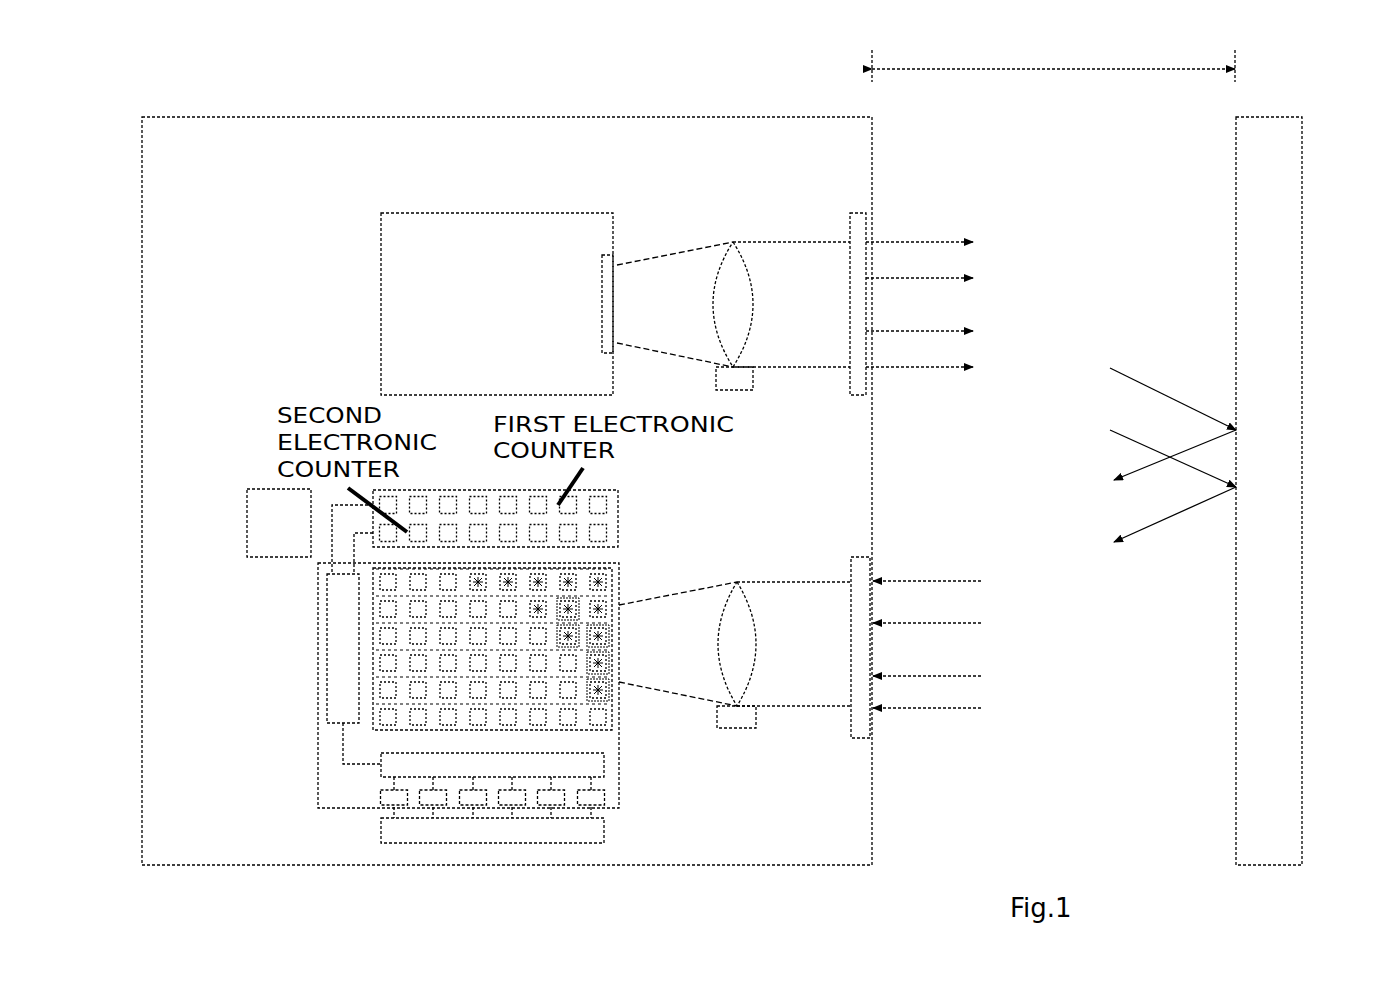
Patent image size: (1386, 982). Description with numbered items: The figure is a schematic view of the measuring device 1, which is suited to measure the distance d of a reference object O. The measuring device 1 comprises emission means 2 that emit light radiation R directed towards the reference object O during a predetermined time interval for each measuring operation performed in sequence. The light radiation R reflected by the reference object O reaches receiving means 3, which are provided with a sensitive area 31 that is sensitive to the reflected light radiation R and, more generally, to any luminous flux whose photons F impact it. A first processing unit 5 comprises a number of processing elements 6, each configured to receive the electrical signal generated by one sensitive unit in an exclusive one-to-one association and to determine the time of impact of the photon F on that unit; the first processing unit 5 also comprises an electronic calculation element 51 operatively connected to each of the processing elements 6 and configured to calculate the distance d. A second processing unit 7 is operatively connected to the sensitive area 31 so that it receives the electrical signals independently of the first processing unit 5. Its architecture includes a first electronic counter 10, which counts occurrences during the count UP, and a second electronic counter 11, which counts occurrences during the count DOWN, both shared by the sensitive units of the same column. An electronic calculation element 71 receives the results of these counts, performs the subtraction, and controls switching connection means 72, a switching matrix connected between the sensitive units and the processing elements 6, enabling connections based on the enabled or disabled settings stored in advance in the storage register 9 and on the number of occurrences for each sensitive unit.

The measuring device 1 is at (188, 90).
The emission means 2 is at (502, 255).
The receiving means 3 is at (622, 722).
The sensitive area 31 is at (610, 590).
The first processing unit 5 is at (262, 822).
The electronic calculation element 51 is at (397, 823).
The processing elements 6 is at (372, 796).
The second processing unit 7 is at (297, 713).
The electronic calculation element 71 is at (340, 675).
The switching connection means 72 is at (592, 767).
The storage register 9 is at (275, 512).
The first electronic counter 10 is at (627, 500).
The second electronic counter 11 is at (630, 532).
The photons F is at (675, 253).
The light radiation R is at (1051, 463).
The reference object O is at (1277, 153).
The distance d is at (1053, 64).